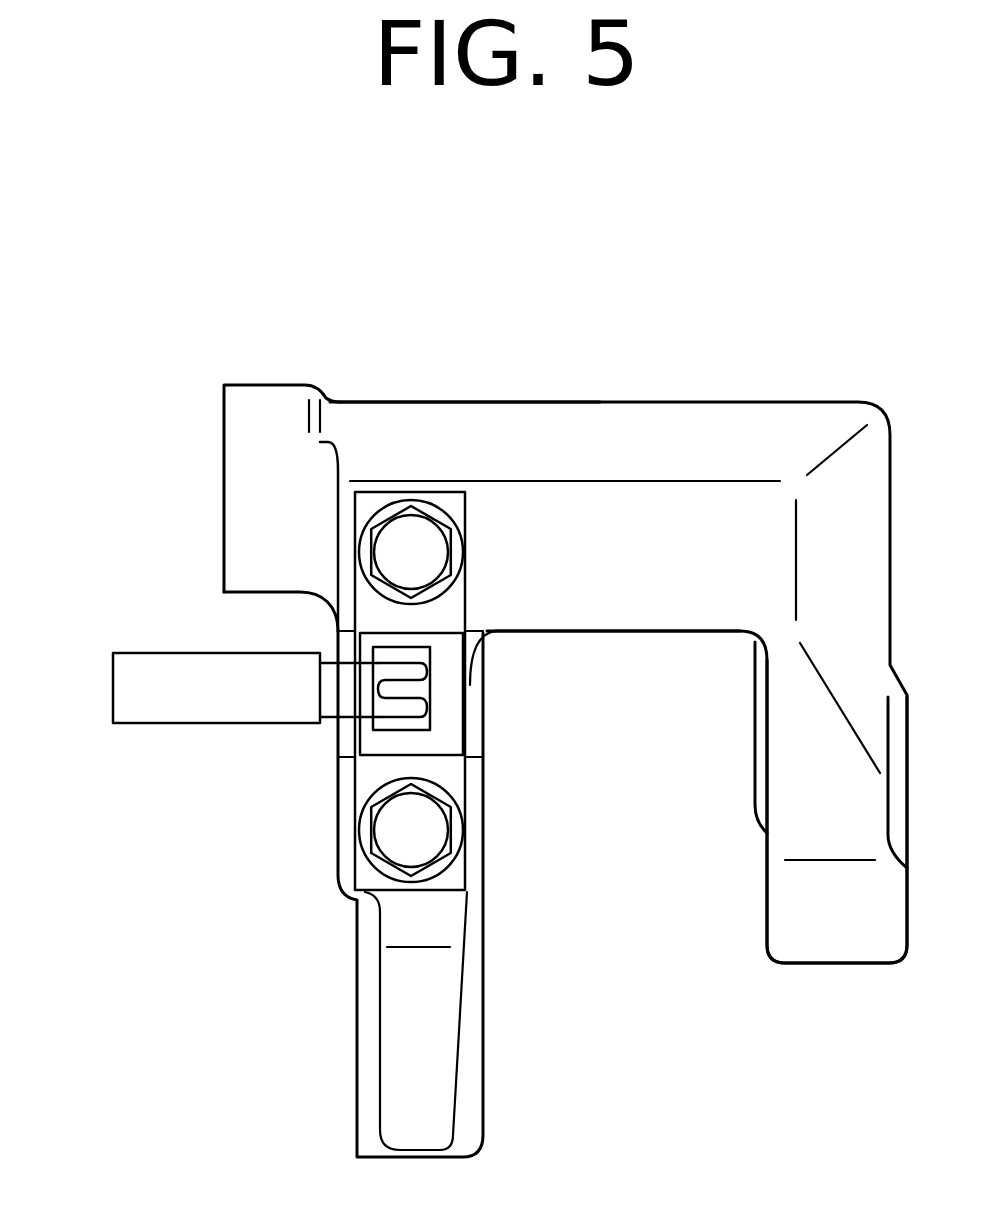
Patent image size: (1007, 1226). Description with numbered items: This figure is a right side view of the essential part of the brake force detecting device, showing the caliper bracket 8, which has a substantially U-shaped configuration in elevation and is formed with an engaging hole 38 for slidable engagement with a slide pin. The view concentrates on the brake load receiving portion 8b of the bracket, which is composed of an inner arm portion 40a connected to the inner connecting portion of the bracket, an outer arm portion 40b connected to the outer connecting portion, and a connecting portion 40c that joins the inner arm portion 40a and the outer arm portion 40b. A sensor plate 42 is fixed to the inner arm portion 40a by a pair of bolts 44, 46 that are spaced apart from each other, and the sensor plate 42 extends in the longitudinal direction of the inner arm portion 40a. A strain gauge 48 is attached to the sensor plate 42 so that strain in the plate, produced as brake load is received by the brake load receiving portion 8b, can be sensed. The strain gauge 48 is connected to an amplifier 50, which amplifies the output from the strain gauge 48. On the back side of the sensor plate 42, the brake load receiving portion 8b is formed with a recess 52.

The caliper bracket 8 is at (648, 398).
The brake load receiving portion 8b is at (492, 412).
The engaging hole 38 is at (224, 498).
The inner arm portion 40a is at (475, 930).
The outer arm portion 40b is at (808, 842).
The connecting portion 40c is at (662, 610).
The sensor plate 42 is at (442, 768).
The bolt 44 is at (432, 552).
The bolt 46 is at (430, 832).
The strain gauge 48 is at (420, 678).
The amplifier 50 is at (113, 690).
The recess 52 is at (345, 745).